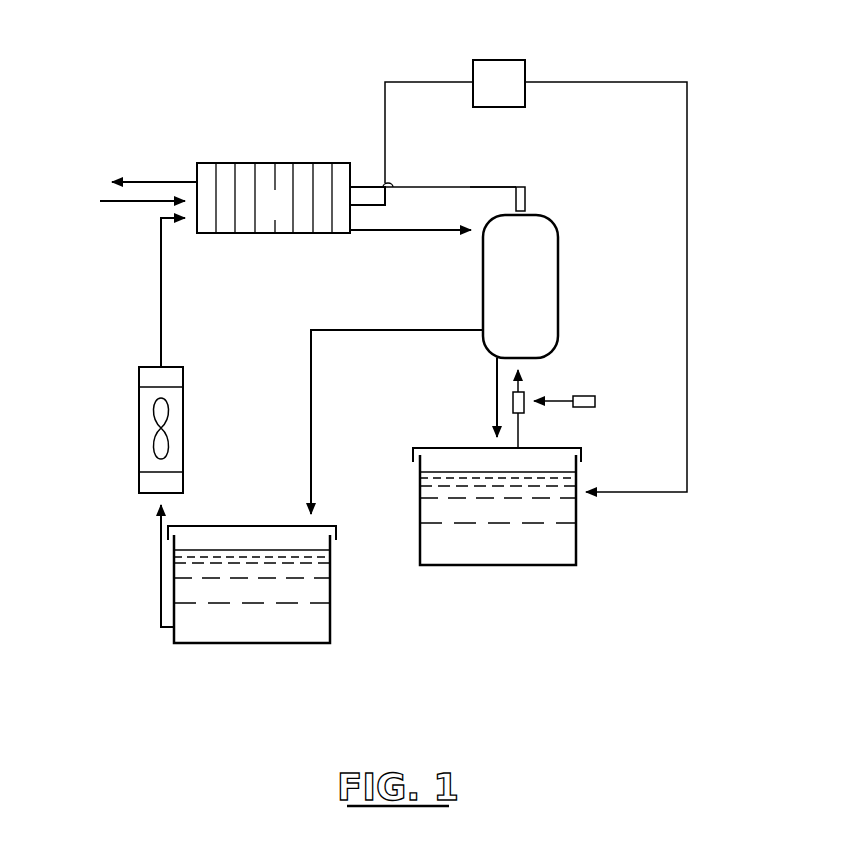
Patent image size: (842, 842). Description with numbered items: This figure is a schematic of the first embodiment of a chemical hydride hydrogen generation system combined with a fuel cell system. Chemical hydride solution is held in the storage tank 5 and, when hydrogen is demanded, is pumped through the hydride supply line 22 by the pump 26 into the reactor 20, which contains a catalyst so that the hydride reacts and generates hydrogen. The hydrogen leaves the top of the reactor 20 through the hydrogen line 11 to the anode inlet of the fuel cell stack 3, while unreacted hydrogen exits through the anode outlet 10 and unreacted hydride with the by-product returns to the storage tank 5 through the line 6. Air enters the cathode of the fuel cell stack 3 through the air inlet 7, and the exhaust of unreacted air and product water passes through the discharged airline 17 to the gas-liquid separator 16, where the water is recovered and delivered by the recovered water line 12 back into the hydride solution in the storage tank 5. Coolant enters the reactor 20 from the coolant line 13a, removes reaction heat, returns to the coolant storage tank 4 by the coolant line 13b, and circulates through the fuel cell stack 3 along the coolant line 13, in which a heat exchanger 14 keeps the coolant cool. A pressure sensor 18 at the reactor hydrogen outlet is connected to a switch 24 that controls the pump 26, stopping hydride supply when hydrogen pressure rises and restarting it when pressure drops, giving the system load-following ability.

The fuel cell stack 3 is at (266, 218).
The coolant storage tank 4 is at (241, 640).
The chemical hydride storage tank 5 is at (496, 560).
The line 6 is at (497, 403).
The air inlet 7 is at (108, 201).
The anode outlet 10 is at (150, 182).
The hydrogen line 11 is at (516, 187).
The recovered water line 12 is at (689, 468).
The coolant line 13 is at (163, 290).
The coolant line 13a is at (372, 233).
The coolant line 13b is at (311, 365).
The heat exchanger 14 is at (139, 434).
The gas-liquid separator 16 is at (497, 60).
The discharged airline 17 is at (385, 122).
The pressure sensor 18 is at (526, 200).
The reactor 20 is at (506, 326).
The hydride supply line 22 is at (524, 420).
The switch 24 is at (597, 397).
The pump 26 is at (530, 395).